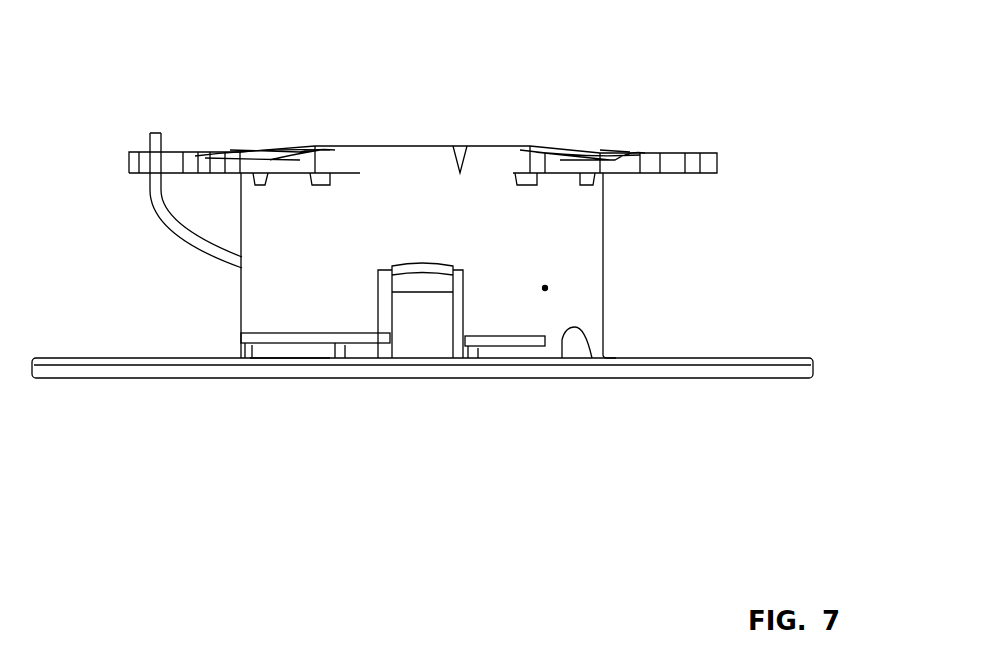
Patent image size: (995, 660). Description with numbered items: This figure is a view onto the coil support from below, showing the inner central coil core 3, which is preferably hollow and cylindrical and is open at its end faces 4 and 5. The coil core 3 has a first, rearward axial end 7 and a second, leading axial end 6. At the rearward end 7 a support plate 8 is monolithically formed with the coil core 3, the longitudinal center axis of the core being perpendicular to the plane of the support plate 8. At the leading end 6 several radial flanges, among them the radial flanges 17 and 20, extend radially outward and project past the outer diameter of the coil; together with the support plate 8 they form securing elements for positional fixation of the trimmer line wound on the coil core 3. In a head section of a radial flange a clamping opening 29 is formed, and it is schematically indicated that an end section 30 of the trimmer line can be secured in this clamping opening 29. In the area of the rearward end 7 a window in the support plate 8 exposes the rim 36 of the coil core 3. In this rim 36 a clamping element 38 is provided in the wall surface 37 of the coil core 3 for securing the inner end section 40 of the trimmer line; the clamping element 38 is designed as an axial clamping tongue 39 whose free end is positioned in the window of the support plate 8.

The coil core 3 is at (603, 235).
The end face 4 is at (365, 146).
The end face 5 is at (288, 383).
The second axial end 6 is at (462, 158).
The first axial end 7 is at (592, 358).
The support plate 8 is at (133, 368).
The radial flange 17 is at (237, 147).
The radial flange 20 is at (627, 150).
The clamping opening 29 is at (148, 173).
The end section of the trimmer line 30 is at (175, 238).
The rim 36 is at (457, 295).
The wall surface 37 is at (545, 288).
The clamping element 38 is at (393, 346).
The axial clamping tongue 39 is at (422, 323).
The inner end section of the trimmer line 40 is at (317, 340).